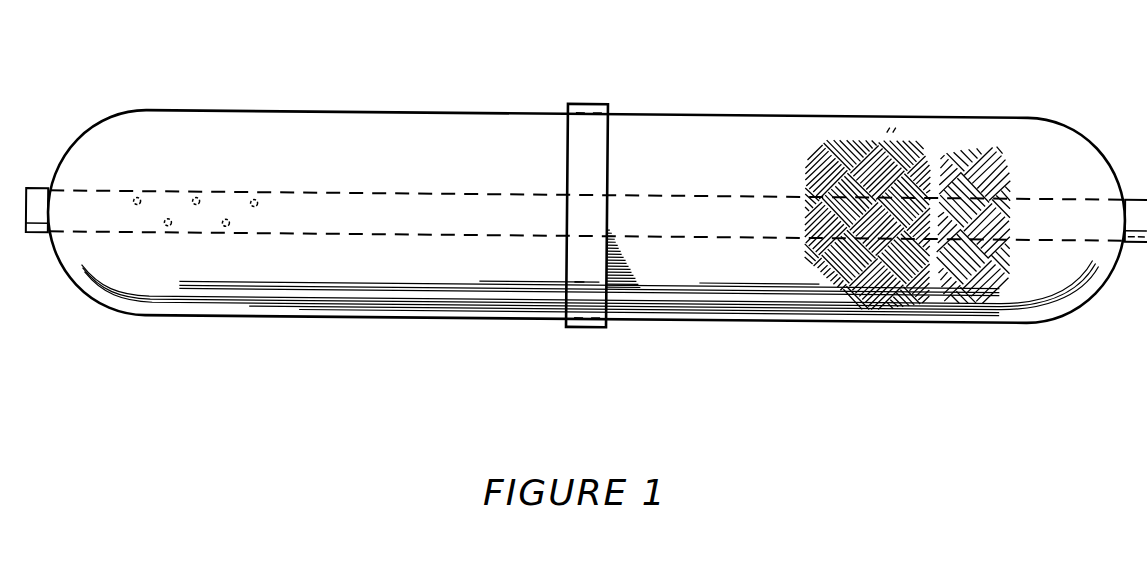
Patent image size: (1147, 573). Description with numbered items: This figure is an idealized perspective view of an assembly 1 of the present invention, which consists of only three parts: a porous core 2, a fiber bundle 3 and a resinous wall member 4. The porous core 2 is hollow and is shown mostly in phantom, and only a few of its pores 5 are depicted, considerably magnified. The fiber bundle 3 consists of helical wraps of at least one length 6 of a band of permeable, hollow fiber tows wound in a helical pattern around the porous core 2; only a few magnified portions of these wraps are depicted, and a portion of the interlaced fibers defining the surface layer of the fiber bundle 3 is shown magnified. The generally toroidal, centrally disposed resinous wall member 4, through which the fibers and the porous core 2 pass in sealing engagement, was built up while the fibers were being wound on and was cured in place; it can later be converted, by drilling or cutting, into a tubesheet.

The assembly 1 is at (870, 99).
The porous core 2 is at (1020, 212).
The fiber bundle 3 is at (368, 308).
The resinous wall member 4 is at (580, 155).
The pores 5 is at (196, 201).
The length of a band of permeable hollow fiber tows 6 is at (830, 291).